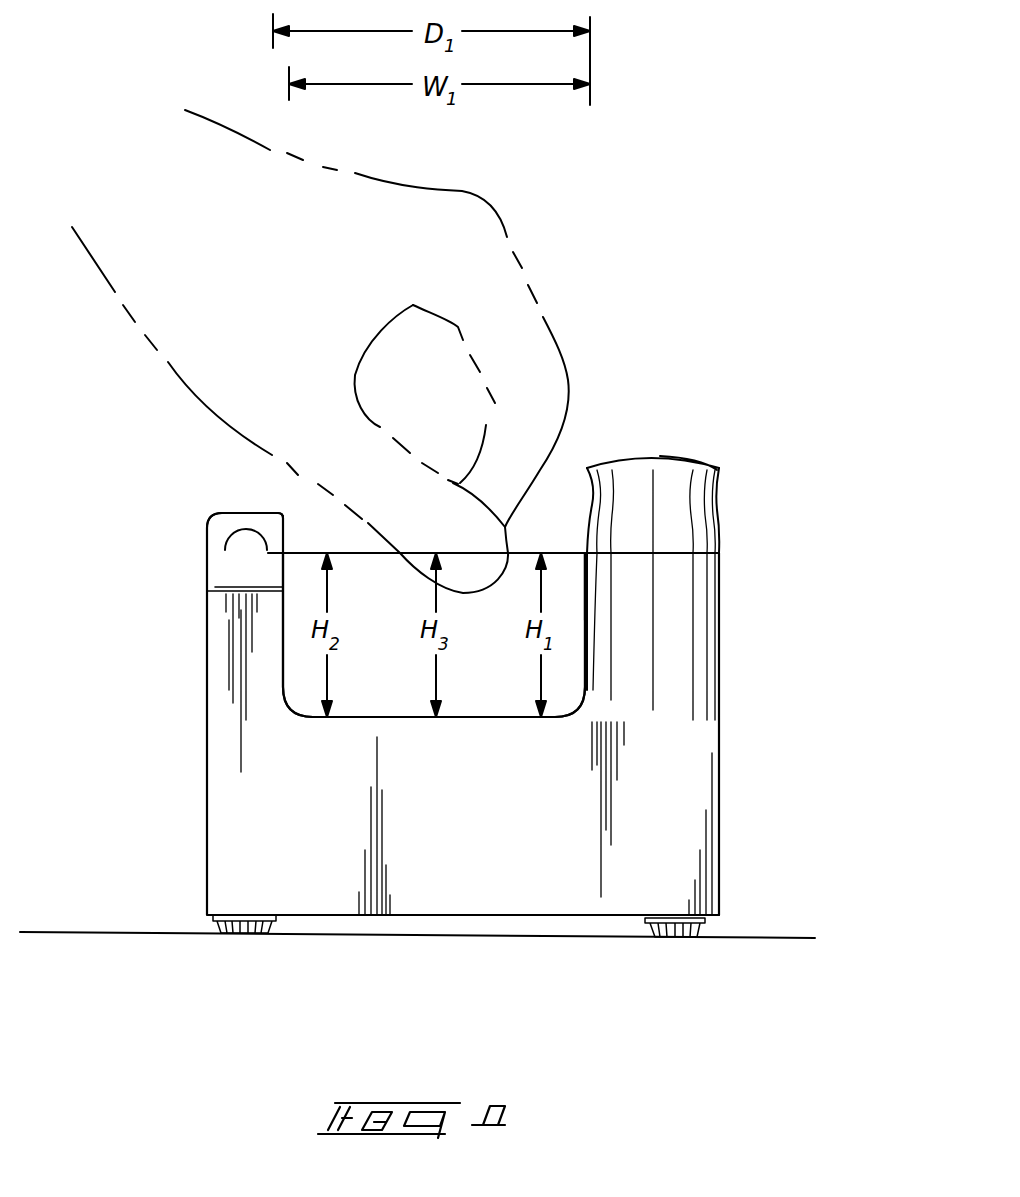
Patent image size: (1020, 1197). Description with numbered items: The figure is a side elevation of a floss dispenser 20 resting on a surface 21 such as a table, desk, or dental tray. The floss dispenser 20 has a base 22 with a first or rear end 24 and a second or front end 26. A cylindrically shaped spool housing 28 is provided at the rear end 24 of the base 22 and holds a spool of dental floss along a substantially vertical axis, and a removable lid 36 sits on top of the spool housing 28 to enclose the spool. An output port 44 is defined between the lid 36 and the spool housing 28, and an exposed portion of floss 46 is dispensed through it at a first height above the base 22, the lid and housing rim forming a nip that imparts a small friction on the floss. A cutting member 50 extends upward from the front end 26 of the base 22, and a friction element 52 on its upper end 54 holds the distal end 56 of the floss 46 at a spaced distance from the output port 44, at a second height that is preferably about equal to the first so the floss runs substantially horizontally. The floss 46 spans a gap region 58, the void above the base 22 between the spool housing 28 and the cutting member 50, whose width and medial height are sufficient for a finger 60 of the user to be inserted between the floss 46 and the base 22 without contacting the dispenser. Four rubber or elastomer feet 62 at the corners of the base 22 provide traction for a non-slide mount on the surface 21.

The floss dispenser 20 is at (790, 677).
The surface 21 is at (770, 937).
The base 22 is at (490, 824).
The first or rear end 24 is at (688, 794).
The second or front end 26 is at (265, 883).
The spool housing 28 is at (678, 642).
The removable lid 36 is at (695, 510).
The output port 44 is at (585, 553).
The exposed portion of floss 46 is at (352, 552).
The cutting member 50 is at (222, 686).
The friction element 52 is at (238, 528).
The upper end 54 is at (208, 561).
The distal end 56 is at (283, 544).
The gap region 58 is at (387, 586).
The finger 60 is at (502, 224).
The feet 62 is at (254, 934).